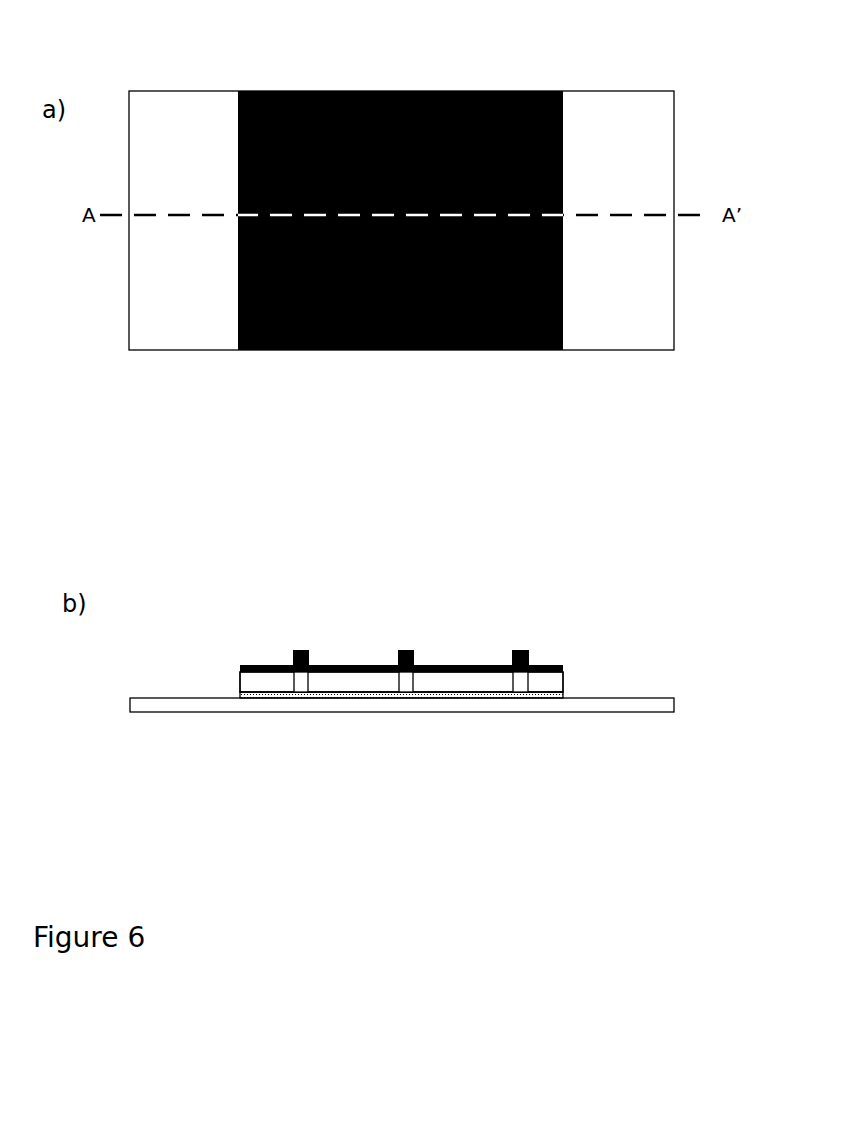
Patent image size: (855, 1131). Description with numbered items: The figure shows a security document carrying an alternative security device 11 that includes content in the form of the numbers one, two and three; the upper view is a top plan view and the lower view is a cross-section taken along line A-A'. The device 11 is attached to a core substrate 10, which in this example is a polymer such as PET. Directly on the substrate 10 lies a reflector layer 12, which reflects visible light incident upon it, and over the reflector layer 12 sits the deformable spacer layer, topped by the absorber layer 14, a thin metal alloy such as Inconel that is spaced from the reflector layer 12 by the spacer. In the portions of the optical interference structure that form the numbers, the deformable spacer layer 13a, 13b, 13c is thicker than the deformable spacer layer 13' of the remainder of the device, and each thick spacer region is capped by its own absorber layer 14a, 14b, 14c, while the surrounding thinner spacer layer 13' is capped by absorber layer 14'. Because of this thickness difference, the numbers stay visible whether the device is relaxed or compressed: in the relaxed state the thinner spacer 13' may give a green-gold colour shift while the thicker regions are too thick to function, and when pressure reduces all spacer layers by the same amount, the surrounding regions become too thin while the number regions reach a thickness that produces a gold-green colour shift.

The core substrate 10 is at (663, 135).
The security device 11 is at (378, 351).
The reflector layer 12 is at (565, 696).
The deformable spacer layer 13' is at (454, 625).
The deformable spacer layer 13a is at (293, 685).
The deformable spacer layer 13b is at (399, 685).
The deformable spacer layer 13c is at (513, 685).
The absorber layer 14 is at (397, 148).
The absorber layer 14' is at (435, 608).
The absorber layer 14a is at (300, 650).
The absorber layer 14b is at (403, 650).
The absorber layer 14c is at (517, 650).